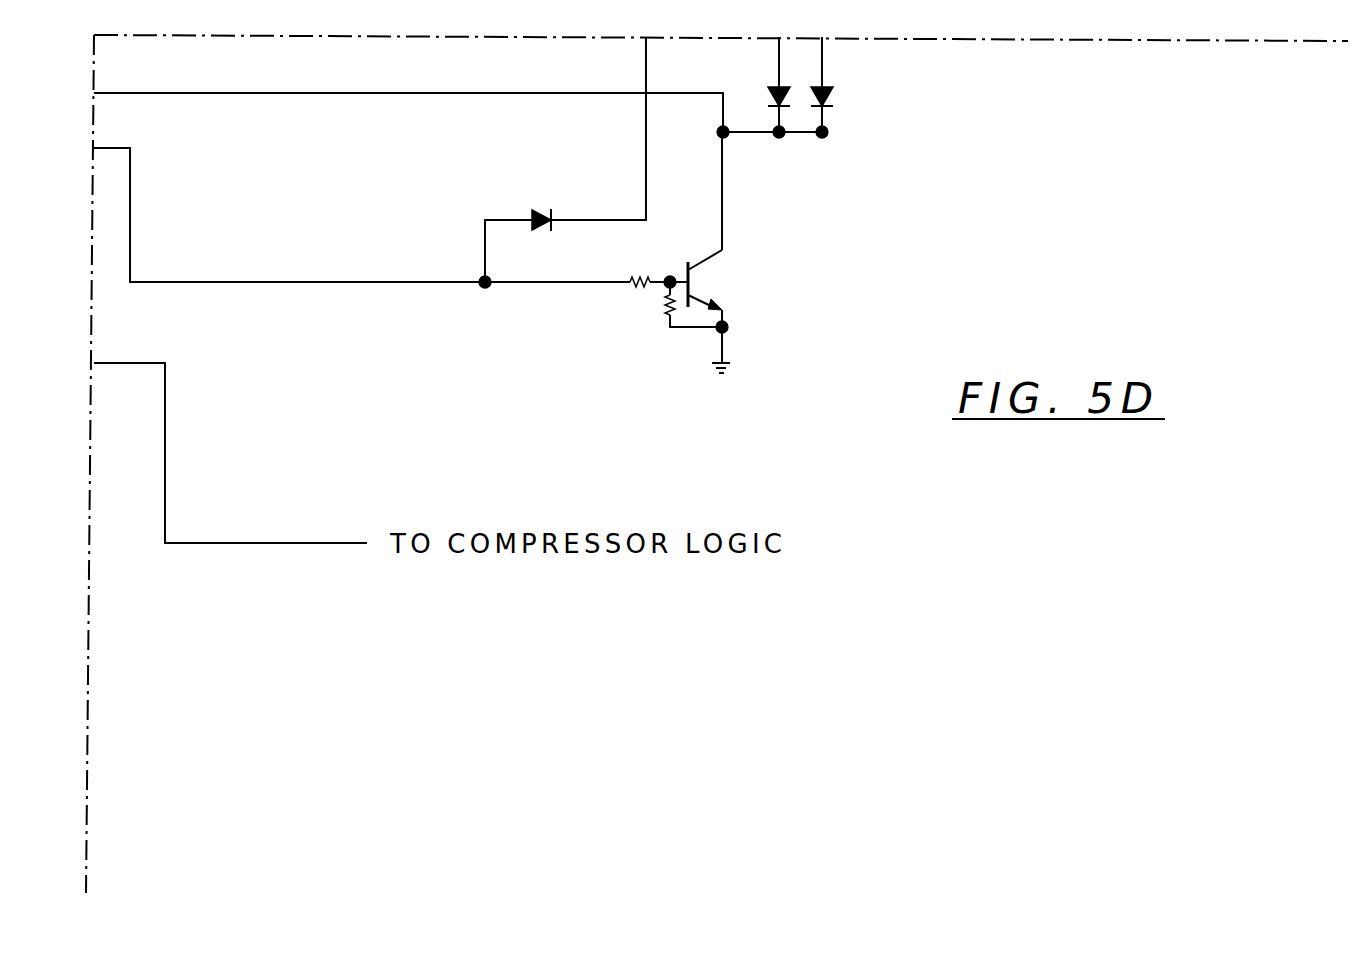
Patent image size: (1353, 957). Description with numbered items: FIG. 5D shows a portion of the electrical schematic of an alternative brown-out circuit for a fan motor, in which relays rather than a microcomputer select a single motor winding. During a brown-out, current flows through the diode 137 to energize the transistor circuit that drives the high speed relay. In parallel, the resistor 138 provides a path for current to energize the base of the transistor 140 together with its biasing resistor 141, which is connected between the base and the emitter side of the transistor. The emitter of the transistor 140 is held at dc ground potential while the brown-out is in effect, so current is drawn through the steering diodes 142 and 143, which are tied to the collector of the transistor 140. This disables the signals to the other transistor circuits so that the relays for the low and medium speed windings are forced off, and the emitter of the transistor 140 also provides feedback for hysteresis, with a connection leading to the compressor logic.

The diode 137 is at (538, 207).
The resistor 138 is at (633, 276).
The transistor 140 is at (708, 280).
The biasing resistor 141 is at (660, 302).
The steering diode 142 is at (827, 87).
The steering diode 143 is at (777, 85).